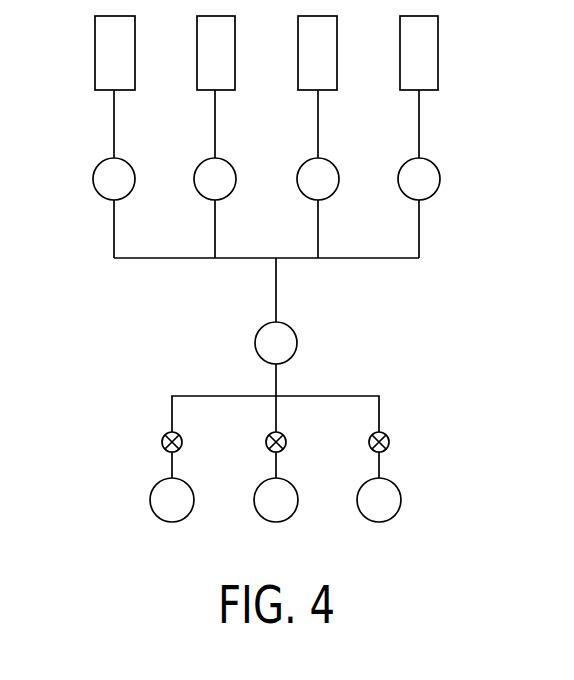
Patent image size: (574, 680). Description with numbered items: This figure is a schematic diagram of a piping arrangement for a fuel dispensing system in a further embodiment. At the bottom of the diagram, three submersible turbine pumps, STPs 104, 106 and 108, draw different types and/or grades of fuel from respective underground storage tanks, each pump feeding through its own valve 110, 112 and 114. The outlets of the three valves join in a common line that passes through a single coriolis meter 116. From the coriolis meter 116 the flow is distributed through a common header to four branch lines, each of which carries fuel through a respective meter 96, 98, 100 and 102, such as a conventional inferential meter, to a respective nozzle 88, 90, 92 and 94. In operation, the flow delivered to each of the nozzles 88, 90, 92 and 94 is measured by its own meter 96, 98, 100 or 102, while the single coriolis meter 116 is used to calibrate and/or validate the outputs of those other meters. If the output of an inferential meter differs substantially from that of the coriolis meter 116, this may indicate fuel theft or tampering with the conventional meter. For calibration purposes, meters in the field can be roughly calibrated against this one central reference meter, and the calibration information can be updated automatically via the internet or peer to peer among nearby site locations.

The nozzle 88 is at (95, 51).
The nozzle 90 is at (197, 52).
The nozzle 92 is at (337, 52).
The nozzle 94 is at (438, 52).
The meter 96 is at (94, 178).
The meter 98 is at (201, 161).
The meter 100 is at (305, 161).
The meter 102 is at (440, 180).
The STP 104 is at (151, 500).
The STP 106 is at (256, 505).
The STP 108 is at (401, 503).
The valve 110 is at (163, 446).
The valve 112 is at (267, 440).
The valve 114 is at (389, 441).
The coriolis meter 116 is at (297, 342).